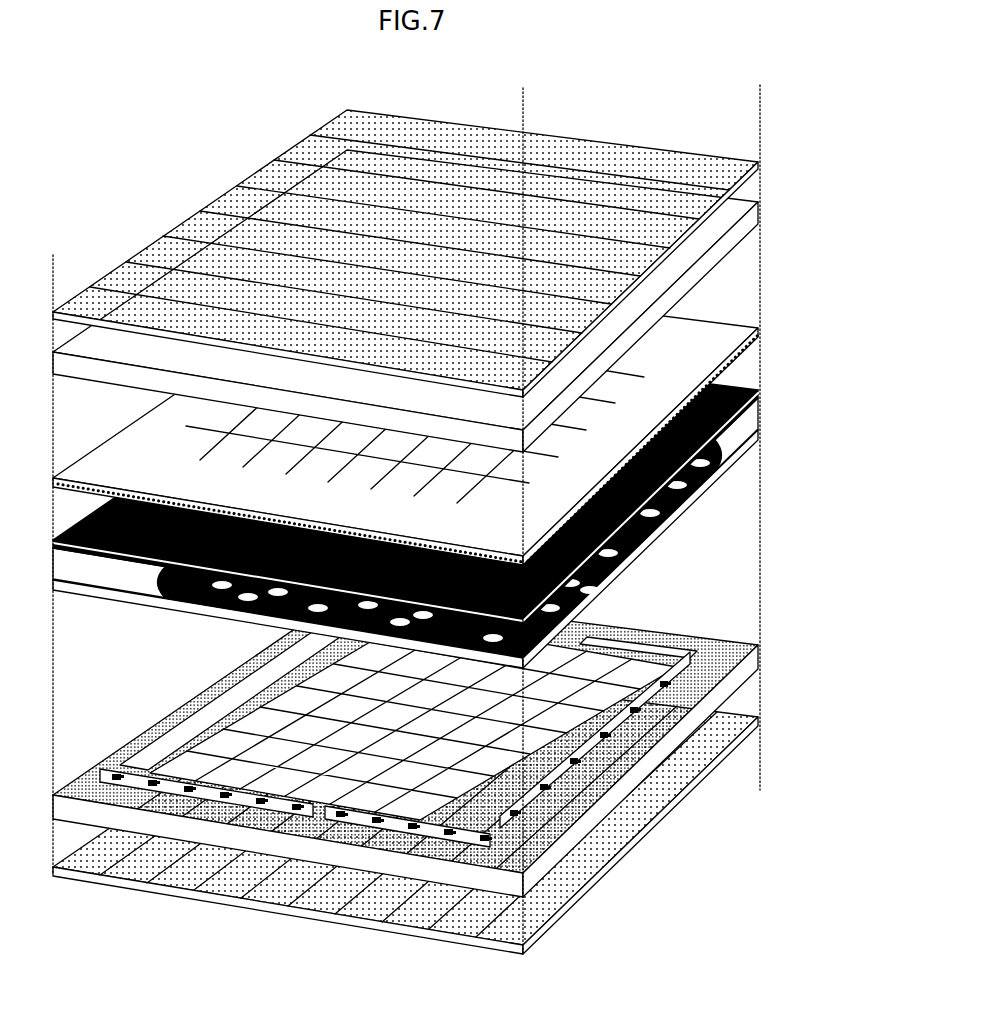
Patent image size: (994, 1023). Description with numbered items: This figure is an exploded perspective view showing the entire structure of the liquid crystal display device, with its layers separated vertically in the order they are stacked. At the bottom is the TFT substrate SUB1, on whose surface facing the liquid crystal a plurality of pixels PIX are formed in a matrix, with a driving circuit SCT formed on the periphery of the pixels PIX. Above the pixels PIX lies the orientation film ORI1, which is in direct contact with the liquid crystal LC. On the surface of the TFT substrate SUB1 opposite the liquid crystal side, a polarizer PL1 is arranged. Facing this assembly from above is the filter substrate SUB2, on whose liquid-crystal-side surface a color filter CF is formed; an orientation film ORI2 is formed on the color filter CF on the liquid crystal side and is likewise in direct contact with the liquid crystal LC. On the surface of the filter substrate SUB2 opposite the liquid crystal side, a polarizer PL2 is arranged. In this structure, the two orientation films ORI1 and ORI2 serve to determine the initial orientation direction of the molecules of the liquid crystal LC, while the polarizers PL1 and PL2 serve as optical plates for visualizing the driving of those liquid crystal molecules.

The polarizer PL2 is at (697, 223).
The filter substrate SUB2 is at (695, 268).
The color filter CF is at (703, 335).
The orientation film ORI2 is at (760, 408).
The orientation film ORI1 is at (732, 457).
The liquid crystal LC is at (707, 492).
The pixels PIX is at (563, 752).
The driving circuit SCT is at (592, 828).
The TFT substrate SUB1 is at (547, 857).
The polarizer PL1 is at (560, 912).